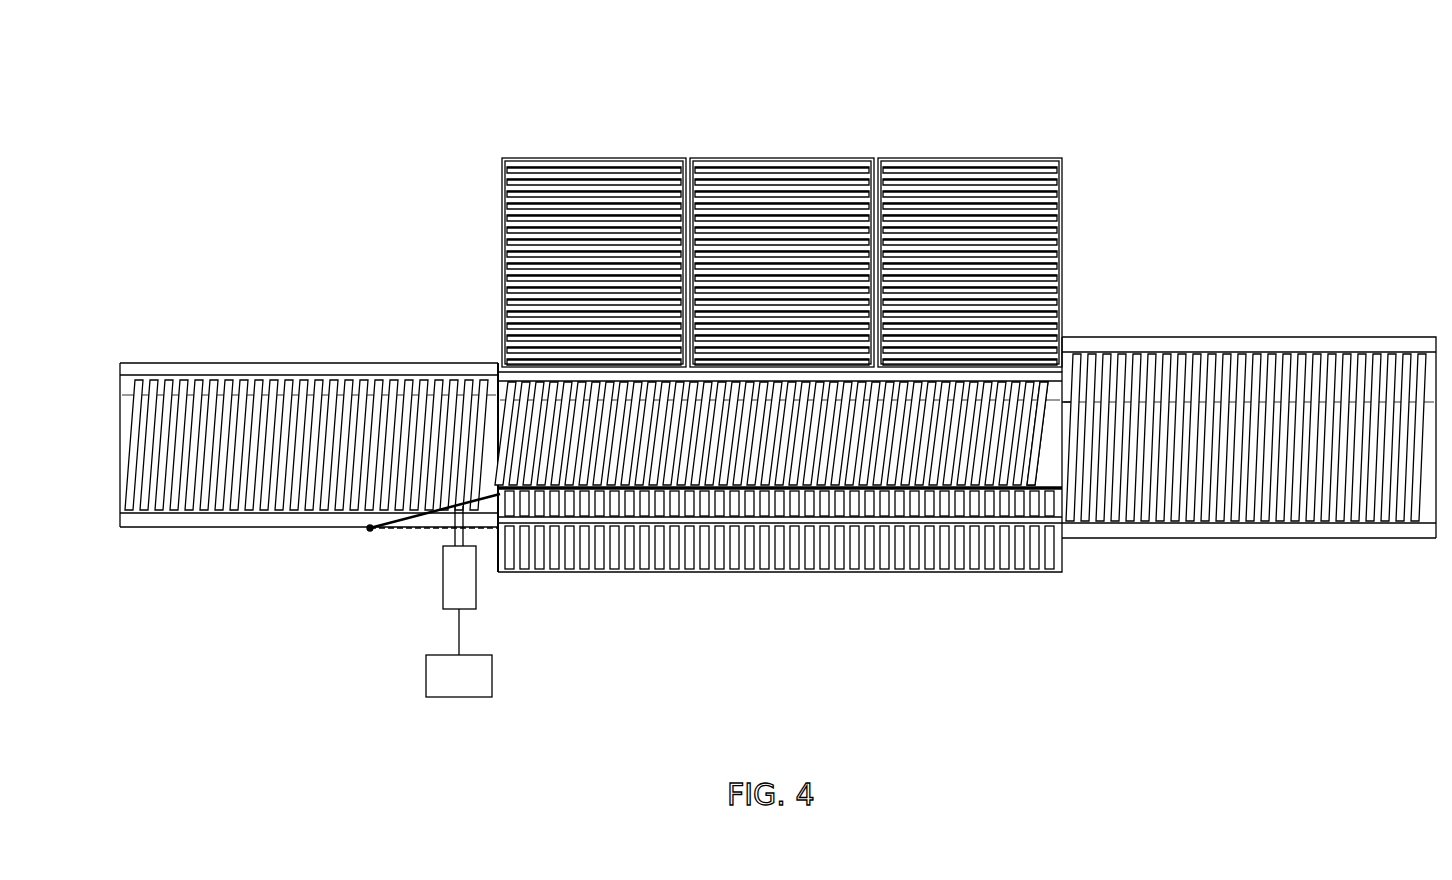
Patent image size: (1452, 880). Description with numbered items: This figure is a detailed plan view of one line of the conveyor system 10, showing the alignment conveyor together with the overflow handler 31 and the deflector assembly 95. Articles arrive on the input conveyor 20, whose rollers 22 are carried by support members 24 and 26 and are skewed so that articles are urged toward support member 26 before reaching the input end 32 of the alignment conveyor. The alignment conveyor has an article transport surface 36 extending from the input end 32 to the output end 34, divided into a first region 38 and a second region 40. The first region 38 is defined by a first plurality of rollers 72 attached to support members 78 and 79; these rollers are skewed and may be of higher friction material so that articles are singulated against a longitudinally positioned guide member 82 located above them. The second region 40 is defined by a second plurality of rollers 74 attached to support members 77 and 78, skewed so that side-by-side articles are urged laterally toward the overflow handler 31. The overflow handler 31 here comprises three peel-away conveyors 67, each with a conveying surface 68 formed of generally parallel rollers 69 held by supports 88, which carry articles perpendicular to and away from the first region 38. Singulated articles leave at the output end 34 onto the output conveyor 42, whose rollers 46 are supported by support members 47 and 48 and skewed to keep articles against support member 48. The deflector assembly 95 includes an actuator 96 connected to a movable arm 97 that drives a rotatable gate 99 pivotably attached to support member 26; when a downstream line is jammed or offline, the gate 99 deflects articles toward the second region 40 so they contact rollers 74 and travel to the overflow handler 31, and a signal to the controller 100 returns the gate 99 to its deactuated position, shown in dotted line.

The conveyor system 10 is at (237, 100).
The input conveyor 20 is at (285, 360).
The rollers 22 is at (210, 500).
The support member 24 is at (215, 365).
The support member 26 is at (263, 523).
The overflow handler 31 is at (527, 90).
The input end 32 is at (500, 415).
The output end 34 is at (1068, 390).
The article transport surface 36 is at (870, 467).
The first region 38 is at (603, 507).
The second region 40 is at (627, 435).
The output conveyor 42 is at (1292, 537).
The rollers 46 is at (1310, 358).
The support member 47 is at (1205, 350).
The support member 48 is at (1203, 535).
The peel-away conveyor 67 is at (812, 168).
The conveying surface 68 is at (527, 172).
The rollers 69 is at (640, 168).
The rollers 72 is at (735, 575).
The rollers 74 is at (1038, 465).
The support member 77 is at (513, 375).
The support member 78 is at (838, 508).
The support member 79 is at (980, 572).
The guide member 82 is at (553, 540).
The supports 88 is at (688, 158).
The deflector assembly 95 is at (338, 706).
The actuator 96 is at (450, 598).
The movable arm 97 is at (468, 538).
The rotatable gate 99 is at (420, 515).
The controller 100 is at (460, 697).